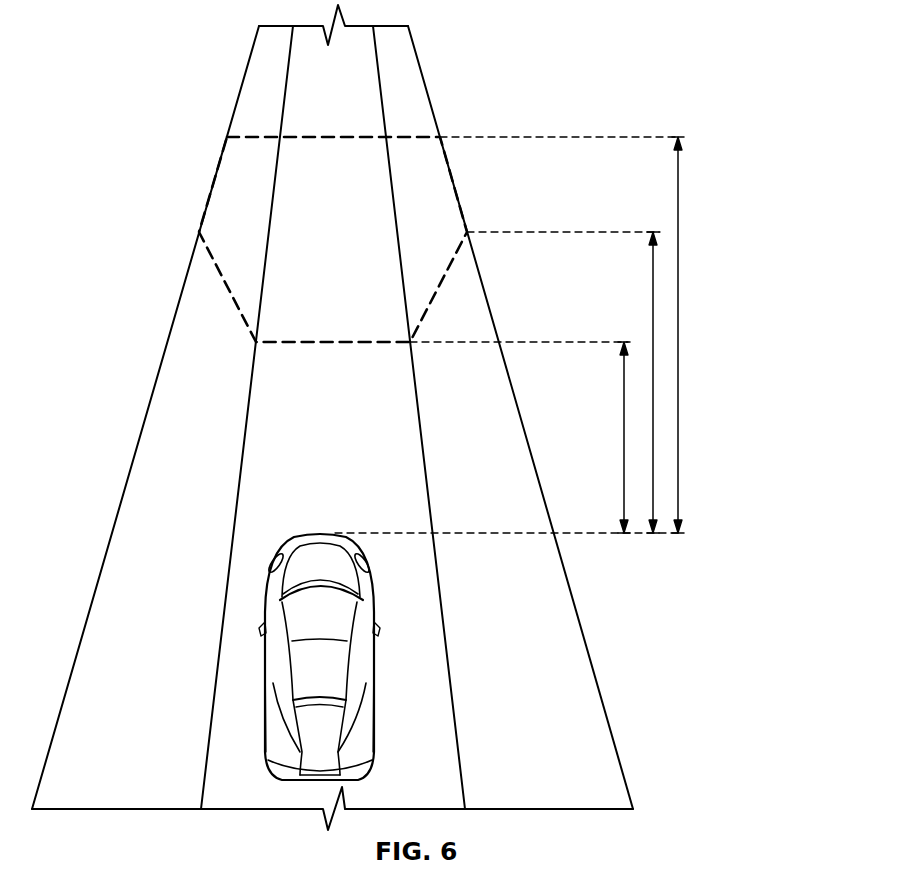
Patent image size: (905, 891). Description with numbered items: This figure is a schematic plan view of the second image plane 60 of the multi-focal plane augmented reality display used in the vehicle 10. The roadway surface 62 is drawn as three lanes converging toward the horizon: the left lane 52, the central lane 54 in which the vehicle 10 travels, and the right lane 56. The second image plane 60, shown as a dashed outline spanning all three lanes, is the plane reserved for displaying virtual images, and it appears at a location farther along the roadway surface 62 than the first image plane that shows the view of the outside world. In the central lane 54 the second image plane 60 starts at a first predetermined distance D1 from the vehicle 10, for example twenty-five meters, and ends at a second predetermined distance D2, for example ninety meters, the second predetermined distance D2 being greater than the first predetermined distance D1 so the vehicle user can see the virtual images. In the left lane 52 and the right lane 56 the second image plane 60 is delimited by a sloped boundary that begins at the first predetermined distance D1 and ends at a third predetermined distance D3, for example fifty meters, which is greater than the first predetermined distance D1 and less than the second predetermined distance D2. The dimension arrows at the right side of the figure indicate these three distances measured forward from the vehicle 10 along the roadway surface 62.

The vehicle 10 is at (298, 580).
The left lane 52 is at (162, 438).
The central lane 54 is at (397, 492).
The right lane 56 is at (498, 417).
The second image plane 60 is at (248, 135).
The roadway surface 62 is at (310, 408).
The first predetermined distance D1 is at (624, 443).
The second predetermined distance D2 is at (677, 247).
The third predetermined distance D3 is at (653, 365).